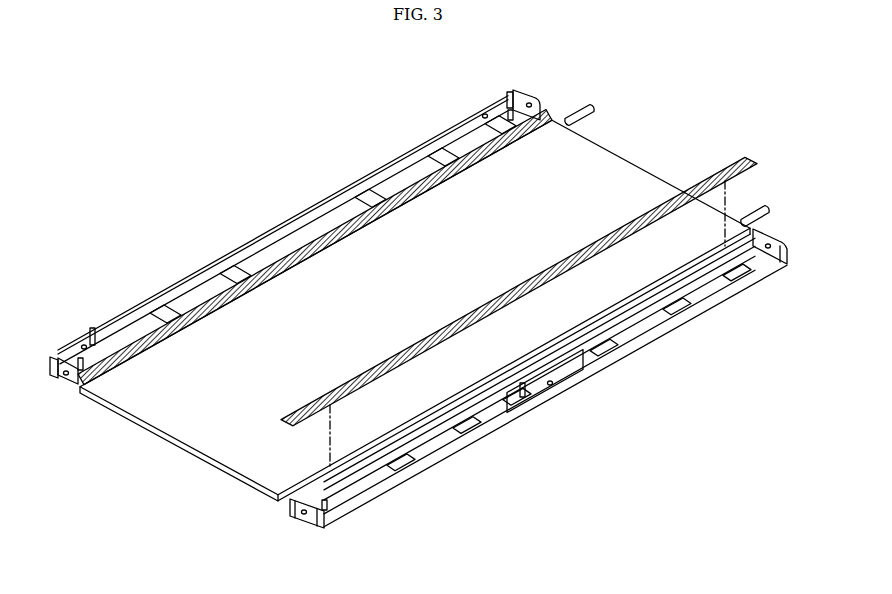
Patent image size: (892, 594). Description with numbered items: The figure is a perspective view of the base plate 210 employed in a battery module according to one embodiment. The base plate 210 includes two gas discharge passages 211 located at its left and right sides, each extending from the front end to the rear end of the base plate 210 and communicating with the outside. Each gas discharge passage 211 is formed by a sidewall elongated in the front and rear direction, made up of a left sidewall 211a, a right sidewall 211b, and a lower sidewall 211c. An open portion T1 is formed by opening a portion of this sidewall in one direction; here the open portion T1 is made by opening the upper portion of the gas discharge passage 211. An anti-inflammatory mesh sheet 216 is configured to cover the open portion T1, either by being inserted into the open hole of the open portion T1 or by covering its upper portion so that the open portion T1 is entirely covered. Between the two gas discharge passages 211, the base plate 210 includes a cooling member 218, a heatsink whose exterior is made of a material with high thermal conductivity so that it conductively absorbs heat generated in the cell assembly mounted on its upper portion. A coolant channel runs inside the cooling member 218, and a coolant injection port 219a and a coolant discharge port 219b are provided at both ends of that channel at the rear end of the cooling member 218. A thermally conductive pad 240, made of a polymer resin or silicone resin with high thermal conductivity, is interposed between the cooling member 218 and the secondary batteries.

The base plate 210 is at (243, 126).
The gas discharge passage 211 is at (86, 388).
The left sidewall 211a is at (378, 445).
The right sidewall 211b is at (296, 524).
The lower sidewall 211c is at (446, 420).
The anti-inflammatory mesh sheet 216 is at (260, 270).
The cooling member 218 is at (163, 433).
The coolant injection port 219a is at (588, 110).
The coolant discharge port 219b is at (765, 206).
The thermally conductive pad 240 is at (227, 347).
The open portion T1 is at (556, 346).